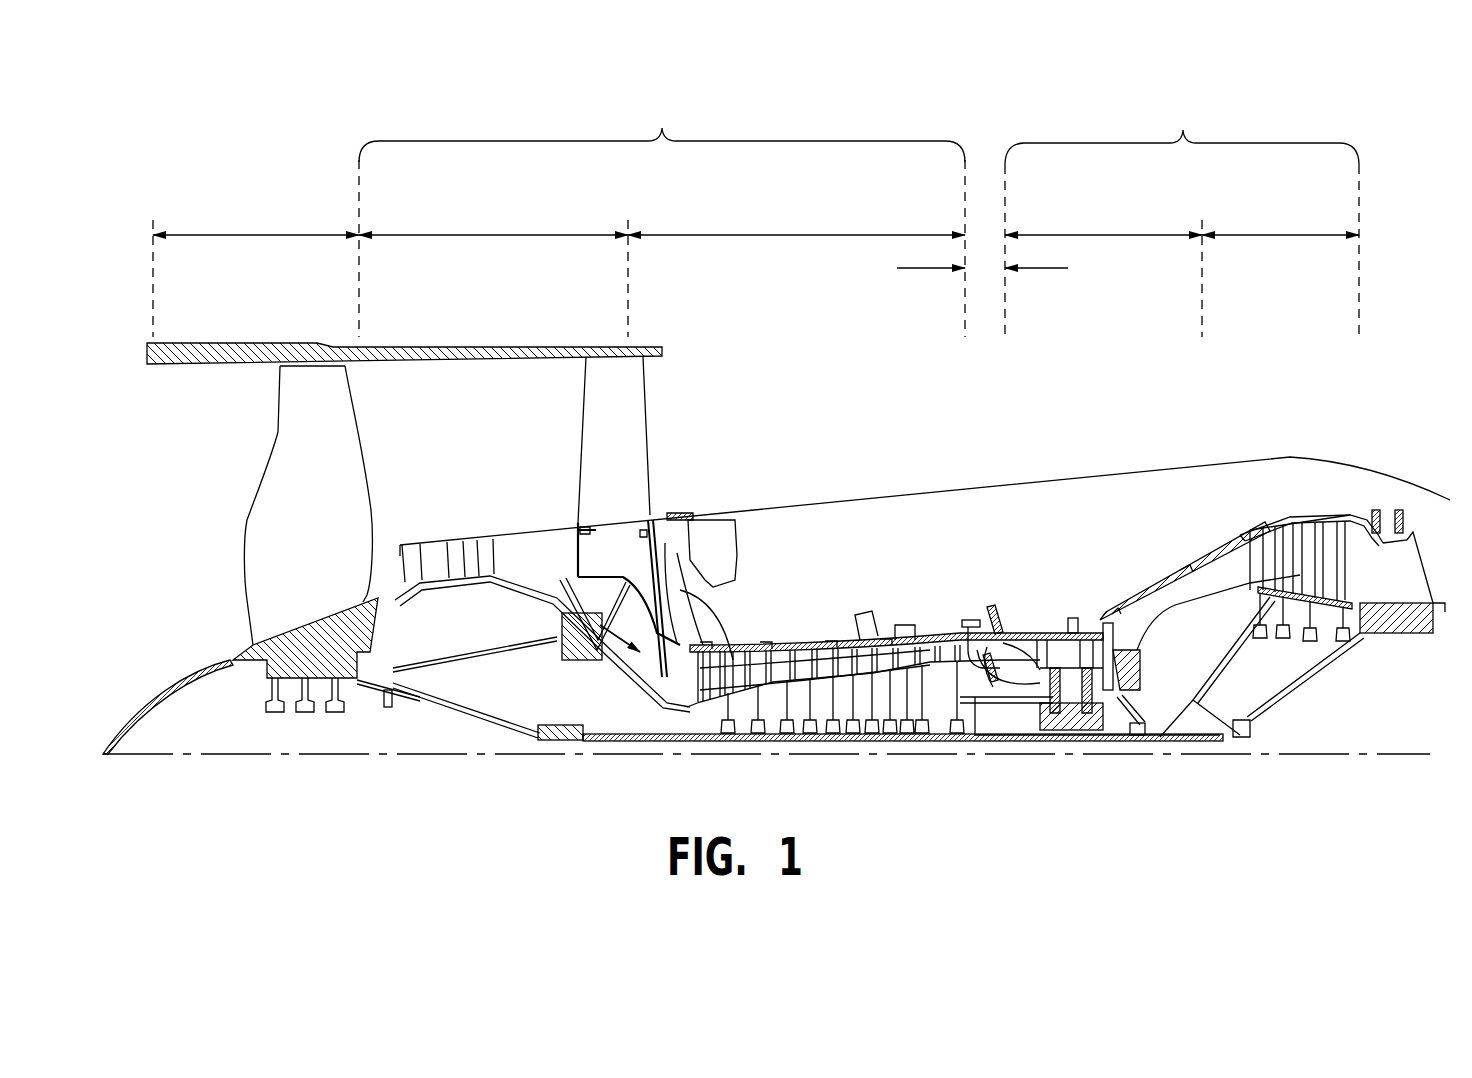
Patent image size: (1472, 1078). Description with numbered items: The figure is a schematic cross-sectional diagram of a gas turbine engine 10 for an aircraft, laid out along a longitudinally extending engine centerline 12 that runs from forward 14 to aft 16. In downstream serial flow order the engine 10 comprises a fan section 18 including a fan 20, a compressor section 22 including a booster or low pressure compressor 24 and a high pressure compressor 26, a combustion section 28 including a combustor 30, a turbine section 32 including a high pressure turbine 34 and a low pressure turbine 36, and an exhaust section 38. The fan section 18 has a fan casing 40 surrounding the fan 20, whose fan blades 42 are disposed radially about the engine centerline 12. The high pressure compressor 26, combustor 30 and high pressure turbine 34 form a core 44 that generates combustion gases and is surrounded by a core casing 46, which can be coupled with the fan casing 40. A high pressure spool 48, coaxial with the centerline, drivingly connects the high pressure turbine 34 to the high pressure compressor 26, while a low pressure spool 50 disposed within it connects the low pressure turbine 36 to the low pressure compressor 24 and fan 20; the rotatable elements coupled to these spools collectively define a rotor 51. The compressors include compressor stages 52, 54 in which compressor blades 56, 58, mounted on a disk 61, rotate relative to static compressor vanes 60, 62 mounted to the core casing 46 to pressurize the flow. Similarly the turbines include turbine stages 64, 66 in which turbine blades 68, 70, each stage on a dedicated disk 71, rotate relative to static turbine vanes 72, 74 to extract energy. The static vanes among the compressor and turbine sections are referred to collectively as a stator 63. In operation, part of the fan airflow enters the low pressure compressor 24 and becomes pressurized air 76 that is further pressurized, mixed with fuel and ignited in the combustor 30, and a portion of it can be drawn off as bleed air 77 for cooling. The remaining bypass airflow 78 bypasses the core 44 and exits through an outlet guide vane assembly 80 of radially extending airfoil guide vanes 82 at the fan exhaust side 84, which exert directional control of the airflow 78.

The gas turbine engine 10 is at (1376, 262).
The engine centerline 12 is at (233, 757).
The forward 14 is at (188, 485).
The aft 16 is at (1463, 583).
The fan section 18 is at (258, 235).
The fan 20 is at (218, 600).
The compressor section 22 is at (662, 130).
The low pressure compressor 24 is at (508, 235).
The high pressure compressor 26 is at (805, 235).
The combustion section 28 is at (912, 269).
The combustor 30 is at (1000, 628).
The turbine section 32 is at (1183, 132).
The high pressure turbine 34 is at (1103, 235).
The low pressure turbine 36 is at (1280, 235).
The exhaust section 38 is at (1427, 548).
The fan casing 40 is at (395, 343).
The fan blades 42 is at (330, 413).
The core 44 is at (926, 524).
The core casing 46 is at (1186, 567).
The HP spool 48 is at (970, 703).
The LP spool 50 is at (560, 736).
The rotor 51 is at (826, 746).
The compressor stages 52 is at (434, 508).
The compressor stages 54 is at (800, 602).
The compressor blades 56 is at (433, 543).
The compressor blades 58 is at (723, 660).
The static compressor vanes 60 is at (420, 543).
The disk 61 is at (450, 586).
The static compressor vanes 62 is at (693, 657).
The stator 63 is at (694, 702).
The turbine stages 64 is at (1076, 631).
The turbine stages 66 is at (1321, 522).
The turbine blades 68 is at (1058, 637).
The turbine blades 70 is at (1345, 530).
The disk 71 is at (1258, 598).
The static turbine vanes 72 is at (1037, 630).
The static turbine vanes 74 is at (1325, 533).
The pressurized air 76 is at (600, 660).
The bleed air 77 is at (822, 640).
The bypass airflow 78 is at (690, 420).
The outlet guide vane assembly 80 is at (660, 478).
The airfoil guide vanes 82 is at (592, 455).
The fan exhaust side 84 is at (666, 394).